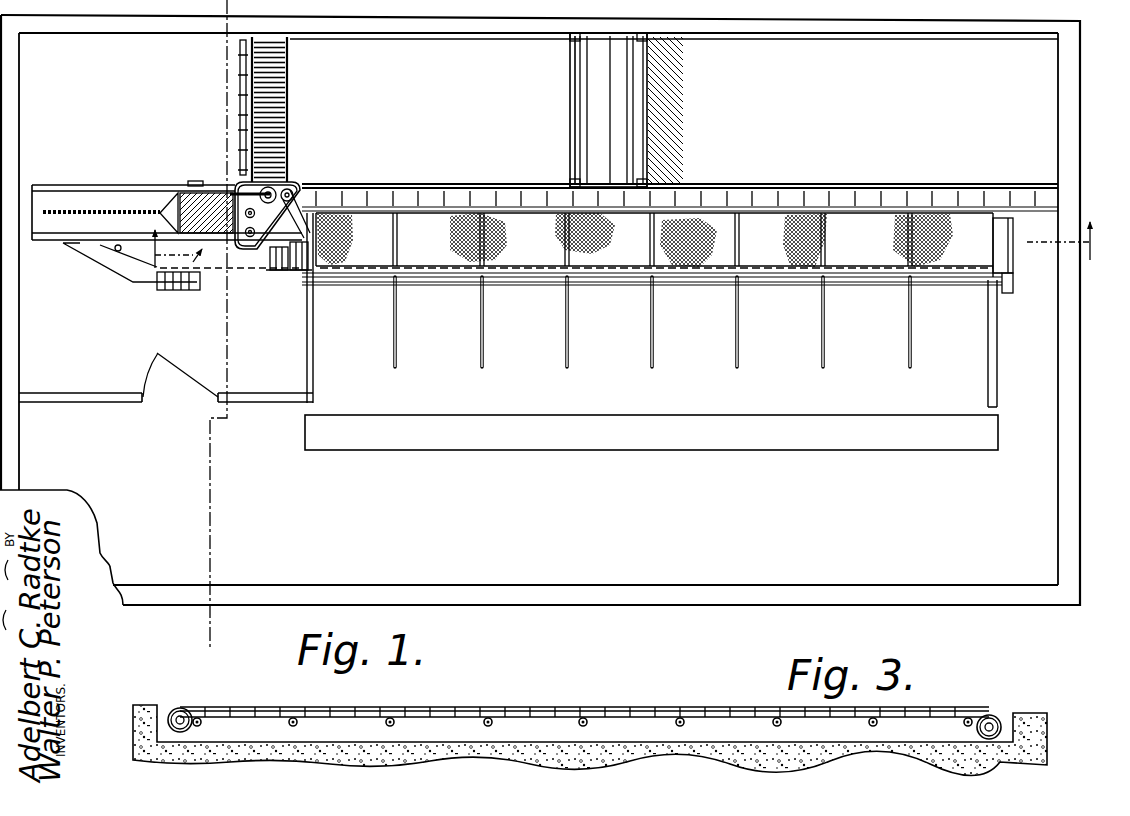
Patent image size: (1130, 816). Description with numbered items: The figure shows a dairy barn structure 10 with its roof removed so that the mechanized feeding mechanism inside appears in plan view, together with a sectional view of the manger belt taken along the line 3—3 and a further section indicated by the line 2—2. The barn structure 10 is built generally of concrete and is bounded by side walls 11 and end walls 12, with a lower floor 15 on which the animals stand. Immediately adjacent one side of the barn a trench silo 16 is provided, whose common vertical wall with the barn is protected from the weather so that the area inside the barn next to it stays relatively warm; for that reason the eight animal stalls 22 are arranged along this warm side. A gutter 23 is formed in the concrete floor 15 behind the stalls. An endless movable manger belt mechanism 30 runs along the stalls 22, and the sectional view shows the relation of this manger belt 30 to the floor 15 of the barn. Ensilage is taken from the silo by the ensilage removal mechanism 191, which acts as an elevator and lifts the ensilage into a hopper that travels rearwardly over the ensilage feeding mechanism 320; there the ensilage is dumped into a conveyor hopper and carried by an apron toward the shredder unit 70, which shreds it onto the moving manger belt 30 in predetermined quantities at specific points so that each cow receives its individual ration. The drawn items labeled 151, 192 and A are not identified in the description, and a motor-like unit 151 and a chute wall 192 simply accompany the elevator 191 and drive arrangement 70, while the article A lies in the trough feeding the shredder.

In FIG. 1, the barn structure 10 is at (276, 606).
In FIG. 1, the side walls 11 is at (503, 604).
In FIG. 1, the end walls 12 is at (8, 333).
In FIG. 1, the lower floor 15 is at (1037, 542).
In FIG. 3, the lower floor 15 is at (373, 750).
In FIG. 1, the trench silo 16 is at (1046, 112).
In FIG. 1, the animal stalls 22 is at (379, 350).
In FIG. 1, the gutter 23 is at (462, 440).
In FIG. 1, the manger belt mechanism 30 is at (867, 257).
In FIG. 3, the manger belt mechanism 30 is at (745, 706).
In FIG. 1, the shredder unit 70 is at (265, 218).
In FIG. 1, the motor 151 is at (182, 275).
In FIG. 1, the ensilage removal mechanism 191 is at (569, 118).
In FIG. 1, the chute wall 192 is at (577, 70).
In FIG. 1, the ensilage feeding mechanism 320 is at (236, 67).
In FIG. 1, the article A is at (217, 223).
In FIG. 1, the section line 2— 2 is at (251, 8).
In FIG. 1, the section line 3— 3 is at (623, 245).